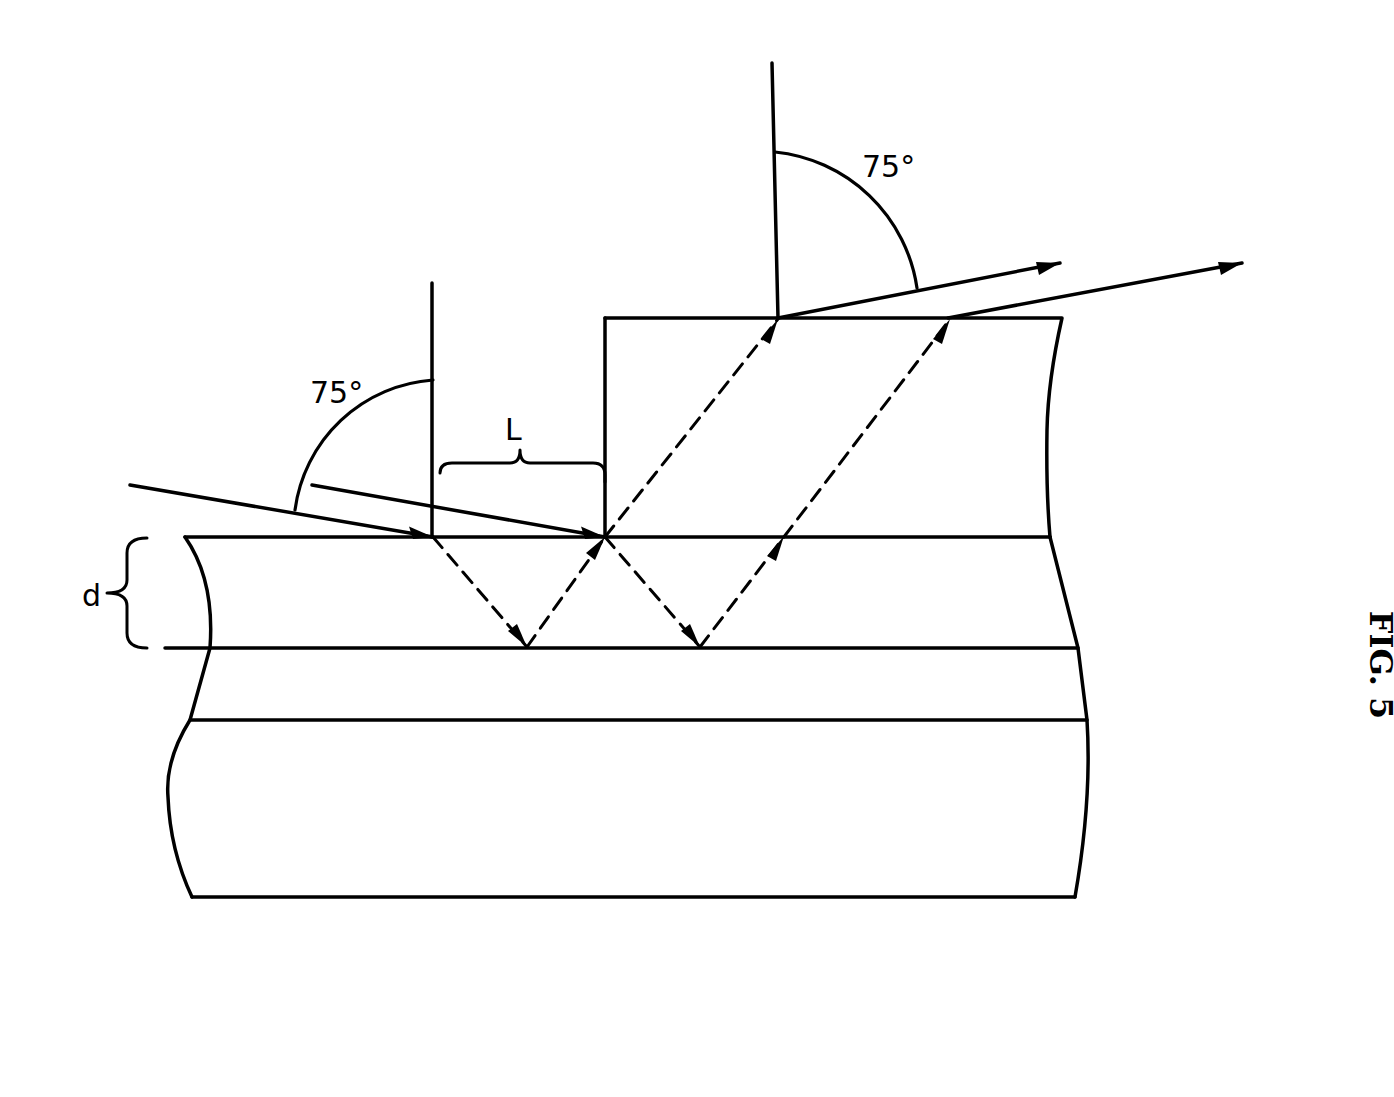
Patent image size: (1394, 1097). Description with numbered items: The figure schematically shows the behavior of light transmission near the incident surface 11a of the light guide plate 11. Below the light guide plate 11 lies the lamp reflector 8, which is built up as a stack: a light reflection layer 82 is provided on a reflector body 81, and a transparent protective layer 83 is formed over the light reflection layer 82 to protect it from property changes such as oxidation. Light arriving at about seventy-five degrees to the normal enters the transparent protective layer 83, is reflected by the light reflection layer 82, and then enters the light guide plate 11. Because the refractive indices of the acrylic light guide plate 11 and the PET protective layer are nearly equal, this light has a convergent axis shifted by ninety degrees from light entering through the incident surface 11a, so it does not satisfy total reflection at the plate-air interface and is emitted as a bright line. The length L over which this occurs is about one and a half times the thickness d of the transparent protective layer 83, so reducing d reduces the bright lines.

The light guide plate 11 is at (1049, 438).
The incident surface 11a is at (602, 360).
The transparent protective layer 83 is at (1067, 601).
The light reflection layer 82 is at (1085, 677).
The reflector body 81 is at (671, 812).
The lamp reflector 8 is at (736, 707).